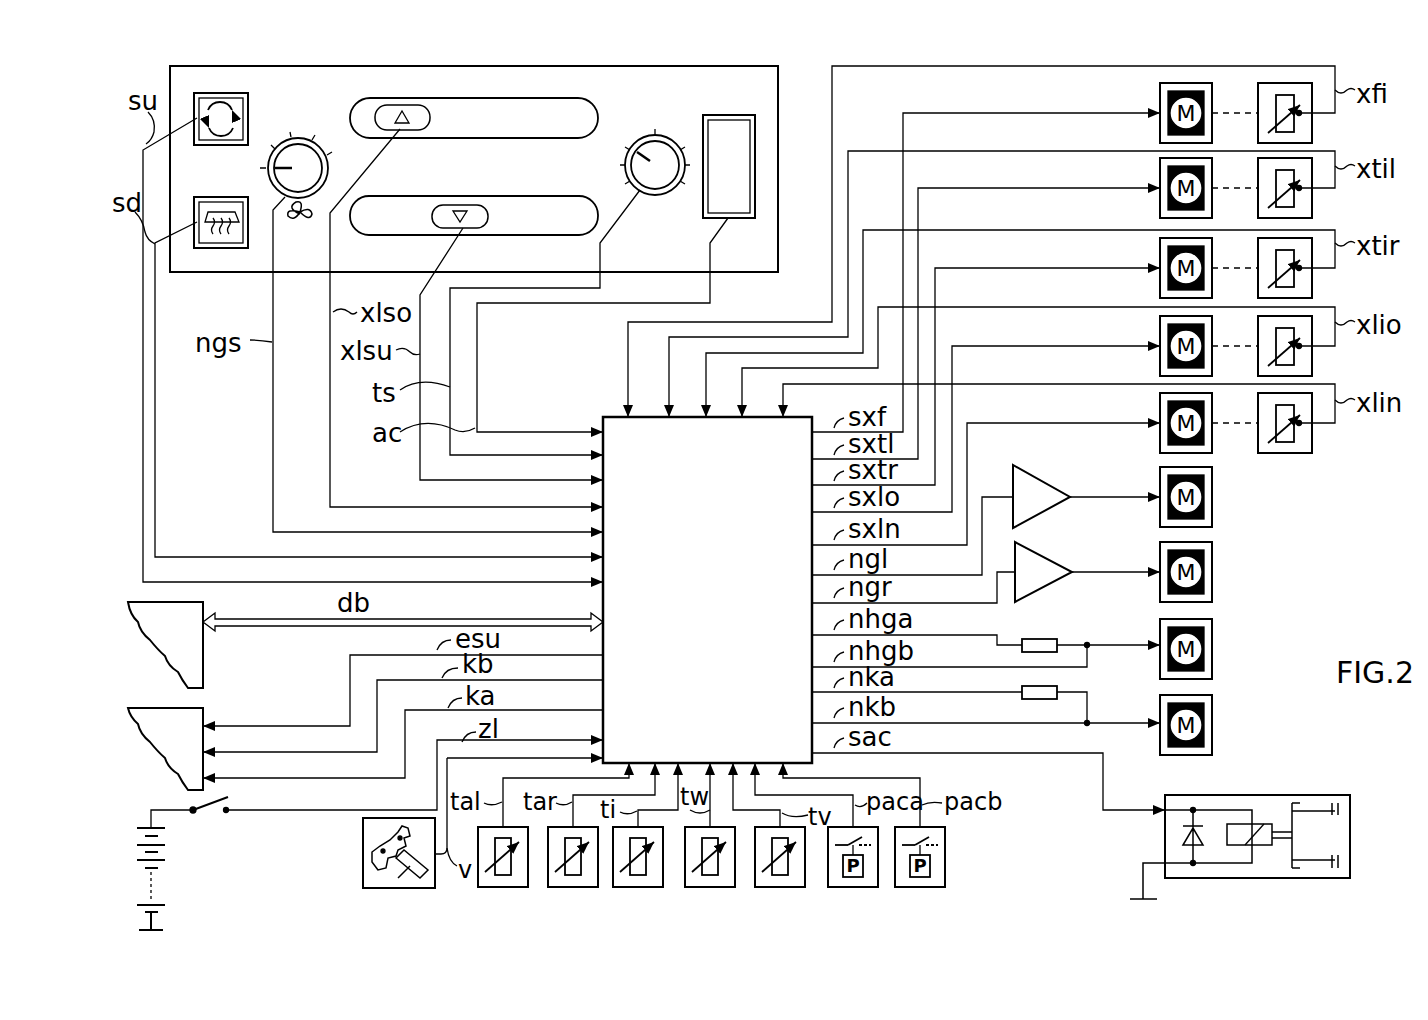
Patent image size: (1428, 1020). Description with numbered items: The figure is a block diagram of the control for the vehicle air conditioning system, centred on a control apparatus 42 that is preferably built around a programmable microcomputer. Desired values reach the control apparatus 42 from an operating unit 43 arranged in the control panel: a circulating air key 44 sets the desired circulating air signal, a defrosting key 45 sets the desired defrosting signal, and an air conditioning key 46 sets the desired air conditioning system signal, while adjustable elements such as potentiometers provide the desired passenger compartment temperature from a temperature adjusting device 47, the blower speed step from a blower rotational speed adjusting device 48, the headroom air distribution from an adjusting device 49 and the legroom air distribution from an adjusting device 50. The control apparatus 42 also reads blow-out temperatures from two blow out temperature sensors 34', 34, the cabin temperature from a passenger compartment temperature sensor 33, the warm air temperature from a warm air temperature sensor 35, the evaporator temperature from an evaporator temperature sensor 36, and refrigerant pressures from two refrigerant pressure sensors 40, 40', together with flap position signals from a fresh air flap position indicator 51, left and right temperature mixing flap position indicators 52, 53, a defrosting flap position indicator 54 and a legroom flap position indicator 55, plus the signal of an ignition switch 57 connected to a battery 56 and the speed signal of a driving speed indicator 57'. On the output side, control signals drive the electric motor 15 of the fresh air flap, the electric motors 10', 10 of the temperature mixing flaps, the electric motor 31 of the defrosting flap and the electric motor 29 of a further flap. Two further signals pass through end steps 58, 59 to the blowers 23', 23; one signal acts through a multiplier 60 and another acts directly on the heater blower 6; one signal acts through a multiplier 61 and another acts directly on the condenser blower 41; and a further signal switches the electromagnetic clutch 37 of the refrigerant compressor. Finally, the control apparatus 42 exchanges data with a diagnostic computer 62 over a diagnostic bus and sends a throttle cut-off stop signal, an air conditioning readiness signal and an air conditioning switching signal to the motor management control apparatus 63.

The operating unit 43 is at (778, 80).
The circulating air key 44 is at (248, 98).
The defrost switch 45 is at (209, 197).
The air conditioning key 46 is at (728, 115).
The temperature adjusting device 47 is at (663, 180).
The blower rotational speed adjusting device 48 is at (310, 170).
The adjusting device 49 is at (402, 110).
The adjusting device 50 is at (460, 204).
The control apparatus 42 is at (606, 416).
The electric motor 15 is at (1212, 98).
The electric motor 10' is at (1210, 187).
The electric motor 10 is at (1206, 266).
The electric motor 31 is at (1212, 330).
The electric motor 29 is at (1212, 440).
The blower 23' is at (1211, 497).
The blower 23 is at (1207, 572).
The heater blower 6 is at (1212, 664).
The condenser blower 41 is at (1212, 710).
The fresh air flap position indicator 51 is at (1305, 125).
The temperature mixing flap position indicator left 52 is at (1305, 200).
The temperature mixing flap position indicator right 53 is at (1305, 280).
The defrosting flap position indicator 54 is at (1305, 358).
The legroom flap position indicator 55 is at (1305, 435).
The end step 58 is at (1054, 460).
The end step 59 is at (1059, 536).
The multiplier 60 is at (1040, 638).
The multiplier 61 is at (1050, 699).
The electromagnetic clutch 37 is at (1272, 777).
The diagnostic computer 62 is at (200, 655).
The motor management control apparatus 63 is at (165, 718).
The battery 56 is at (176, 858).
The ignition switch 57 is at (221, 824).
The driving speed indicator 57' is at (378, 859).
The blow out temperature sensor 34' is at (513, 874).
The blow out temperature sensor 34 is at (578, 874).
The passenger compartment temperature sensor 33 is at (638, 887).
The warm air temperature sensor 35 is at (710, 887).
The evaporator temperature sensor 36 is at (780, 887).
The refrigerant pressure sensor 40 is at (861, 874).
The refrigerant pressure sensor 40' is at (930, 874).